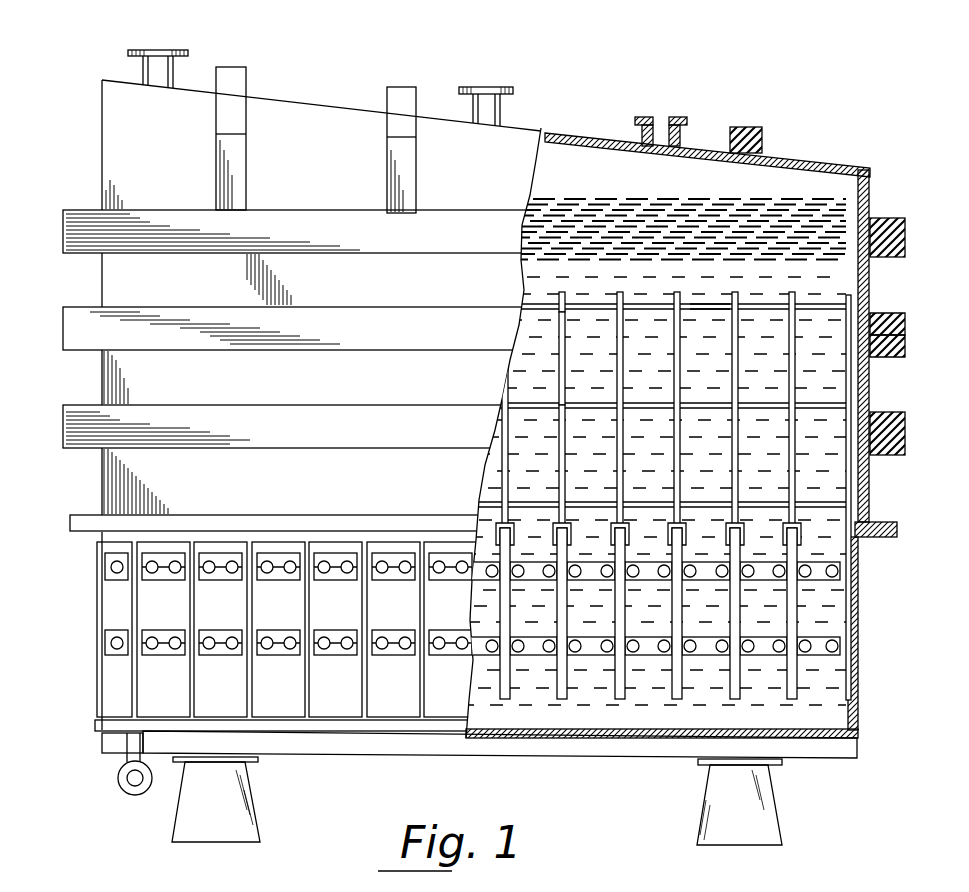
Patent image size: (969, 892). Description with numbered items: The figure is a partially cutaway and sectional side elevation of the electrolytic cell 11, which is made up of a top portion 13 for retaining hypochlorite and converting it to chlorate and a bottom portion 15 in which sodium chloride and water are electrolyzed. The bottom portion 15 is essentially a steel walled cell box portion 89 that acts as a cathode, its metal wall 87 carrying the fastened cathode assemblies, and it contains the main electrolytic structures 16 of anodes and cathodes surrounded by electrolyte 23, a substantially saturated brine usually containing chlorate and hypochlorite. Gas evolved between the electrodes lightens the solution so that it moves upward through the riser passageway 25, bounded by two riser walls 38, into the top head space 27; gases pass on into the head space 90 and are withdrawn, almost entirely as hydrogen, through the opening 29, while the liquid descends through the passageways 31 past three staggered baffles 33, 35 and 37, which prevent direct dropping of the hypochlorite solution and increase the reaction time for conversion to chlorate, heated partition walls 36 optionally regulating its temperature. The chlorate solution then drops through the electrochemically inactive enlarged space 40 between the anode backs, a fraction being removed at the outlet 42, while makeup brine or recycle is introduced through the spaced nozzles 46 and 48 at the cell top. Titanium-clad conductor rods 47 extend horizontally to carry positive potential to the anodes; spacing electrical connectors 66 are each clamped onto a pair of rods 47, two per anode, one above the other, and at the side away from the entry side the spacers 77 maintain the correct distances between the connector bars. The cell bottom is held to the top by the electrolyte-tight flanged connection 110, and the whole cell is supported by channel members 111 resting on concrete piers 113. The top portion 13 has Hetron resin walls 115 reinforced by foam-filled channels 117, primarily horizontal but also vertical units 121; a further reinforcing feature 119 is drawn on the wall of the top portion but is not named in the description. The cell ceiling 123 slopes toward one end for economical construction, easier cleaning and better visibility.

The electrolytic cell 11 is at (97, 285).
The top portion 13 is at (101, 153).
The bottom portion 15 is at (860, 618).
The main electrolytic structures 16 is at (779, 691).
The electrolyte 23 is at (550, 717).
The riser passageway 25 is at (566, 292).
The top head space 27 is at (821, 202).
The opening 29 is at (146, 50).
The passageways 31 is at (706, 320).
The baffle 33 is at (762, 302).
The baffle 35 is at (752, 383).
The heated baffle or partition walls 36 is at (564, 373).
The baffle 37 is at (756, 483).
The riser walls 38 is at (568, 440).
The enlarged space 40 is at (645, 673).
The outlet 42 is at (117, 783).
The nozzle 46 is at (497, 88).
The conductor rods 47 is at (175, 640).
The nozzle 48 is at (666, 117).
The spacing electrical connectors 66 is at (161, 657).
The spacers 77 is at (532, 659).
The wall 87 is at (858, 683).
The cell box portion 89 is at (817, 740).
The head space 90 is at (777, 180).
The flanged connection 110 is at (899, 531).
The channel members 111 is at (494, 758).
The concrete piers 113 is at (255, 797).
The Hetron walls 115 is at (872, 193).
The channels 117 is at (905, 348).
The port 119 is at (893, 322).
The vertical units 121 is at (386, 176).
The cell ceiling 123 is at (298, 101).